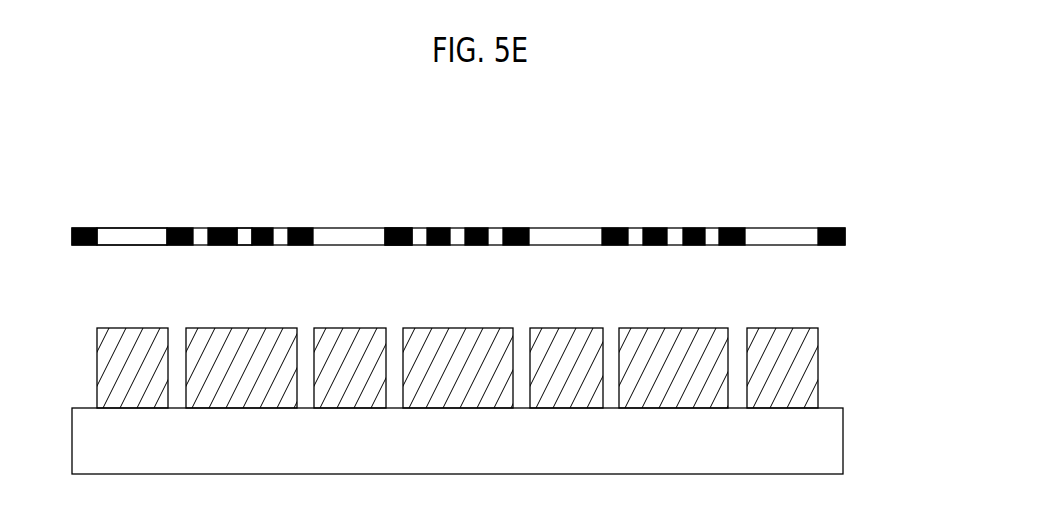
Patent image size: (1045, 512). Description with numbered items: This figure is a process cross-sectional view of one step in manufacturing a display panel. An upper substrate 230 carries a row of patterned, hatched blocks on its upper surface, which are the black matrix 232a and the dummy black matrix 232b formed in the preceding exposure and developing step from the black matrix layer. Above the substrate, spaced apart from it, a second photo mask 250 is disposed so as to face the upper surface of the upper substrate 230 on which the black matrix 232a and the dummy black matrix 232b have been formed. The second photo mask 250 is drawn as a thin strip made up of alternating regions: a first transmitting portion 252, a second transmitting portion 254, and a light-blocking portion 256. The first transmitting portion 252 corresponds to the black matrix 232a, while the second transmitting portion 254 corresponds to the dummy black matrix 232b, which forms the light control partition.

The second photo mask 250 is at (840, 209).
The first transmitting portion 252 is at (143, 233).
The second transmitting portion 254 is at (243, 233).
The light-blocking portion 256 is at (399, 232).
The black matrix 232a is at (783, 363).
The dummy black matrix 232b is at (684, 363).
The upper substrate 230 is at (830, 452).